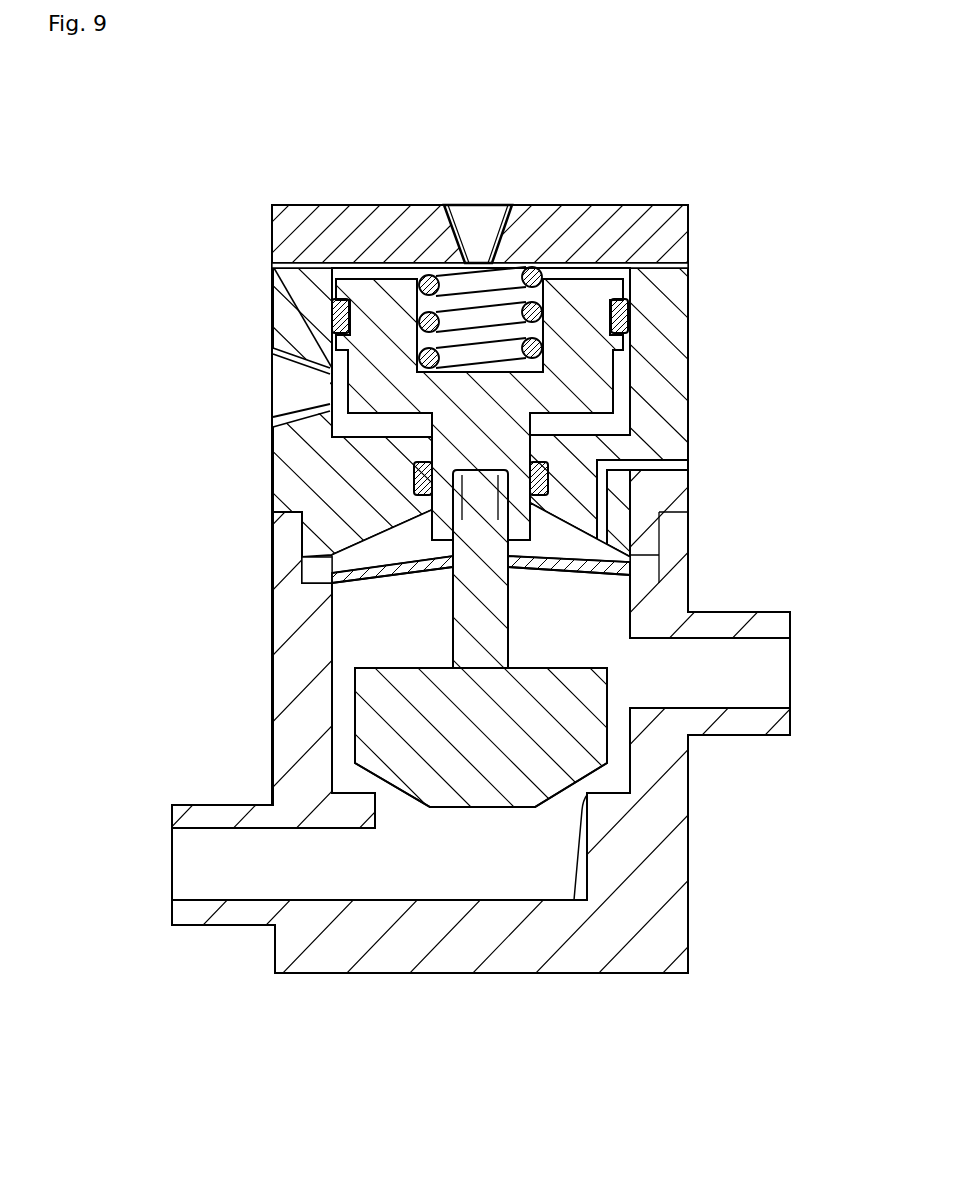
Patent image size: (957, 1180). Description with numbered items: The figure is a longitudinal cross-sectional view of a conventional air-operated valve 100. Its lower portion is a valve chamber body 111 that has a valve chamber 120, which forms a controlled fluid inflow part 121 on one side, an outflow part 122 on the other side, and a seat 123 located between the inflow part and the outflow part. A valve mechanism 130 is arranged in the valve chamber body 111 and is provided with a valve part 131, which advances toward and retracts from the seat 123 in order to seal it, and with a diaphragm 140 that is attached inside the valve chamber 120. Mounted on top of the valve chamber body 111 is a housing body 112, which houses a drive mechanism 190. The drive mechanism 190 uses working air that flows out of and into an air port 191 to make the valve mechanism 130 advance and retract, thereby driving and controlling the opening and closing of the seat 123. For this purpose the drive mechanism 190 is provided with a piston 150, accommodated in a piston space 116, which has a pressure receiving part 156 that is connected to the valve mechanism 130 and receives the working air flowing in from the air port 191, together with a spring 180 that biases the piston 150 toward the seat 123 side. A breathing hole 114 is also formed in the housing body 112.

The air-operated valve 100 is at (689, 205).
The valve chamber body 111 is at (690, 921).
The housing body 112 is at (690, 296).
The breathing hole 114 is at (678, 466).
The piston space 116 is at (355, 276).
The valve chamber 120 is at (482, 862).
The controlled fluid inflow part 121 is at (201, 926).
The outflow part 122 is at (745, 612).
The seat 123 is at (572, 880).
The valve mechanism 130 is at (431, 808).
The valve part 131 is at (375, 732).
The diaphragm 140 is at (392, 574).
The piston 150 is at (612, 372).
The pressure receiving part 156 is at (375, 430).
The spring 180 is at (510, 276).
The drive mechanism 190 is at (400, 279).
The air port 191 is at (276, 386).